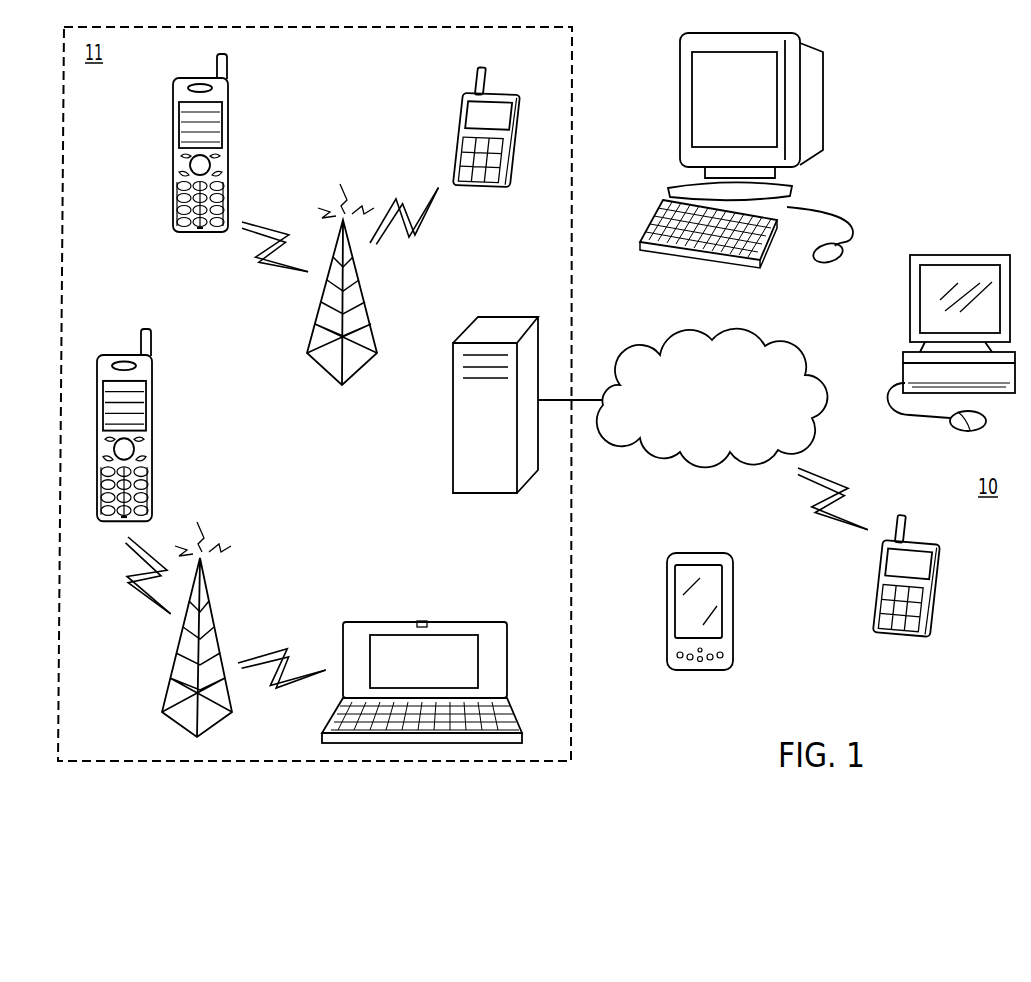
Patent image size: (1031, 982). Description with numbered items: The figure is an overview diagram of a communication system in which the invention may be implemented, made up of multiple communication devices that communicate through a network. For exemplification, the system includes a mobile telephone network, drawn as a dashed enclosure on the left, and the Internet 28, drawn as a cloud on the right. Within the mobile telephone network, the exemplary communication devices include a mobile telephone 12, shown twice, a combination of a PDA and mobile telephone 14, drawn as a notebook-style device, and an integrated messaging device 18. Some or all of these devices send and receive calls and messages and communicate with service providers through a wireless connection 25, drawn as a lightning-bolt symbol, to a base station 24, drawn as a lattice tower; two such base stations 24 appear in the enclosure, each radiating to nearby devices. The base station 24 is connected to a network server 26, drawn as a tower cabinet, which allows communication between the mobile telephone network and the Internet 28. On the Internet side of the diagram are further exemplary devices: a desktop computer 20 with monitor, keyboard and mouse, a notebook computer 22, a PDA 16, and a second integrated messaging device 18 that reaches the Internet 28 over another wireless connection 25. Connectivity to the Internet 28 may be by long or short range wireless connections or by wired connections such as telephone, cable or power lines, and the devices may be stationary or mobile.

The mobile telephone 12 is at (228, 153).
The combination of a PDA and mobile telephone 14 is at (425, 622).
The PDA 16 is at (733, 598).
The integrated messaging device 18 is at (460, 138).
The desktop computer 20 is at (823, 95).
The notebook computer 22 is at (960, 255).
The base station 24 is at (362, 288).
The wireless connection 25 is at (853, 502).
The network server 26 is at (453, 417).
The Internet 28 is at (748, 332).